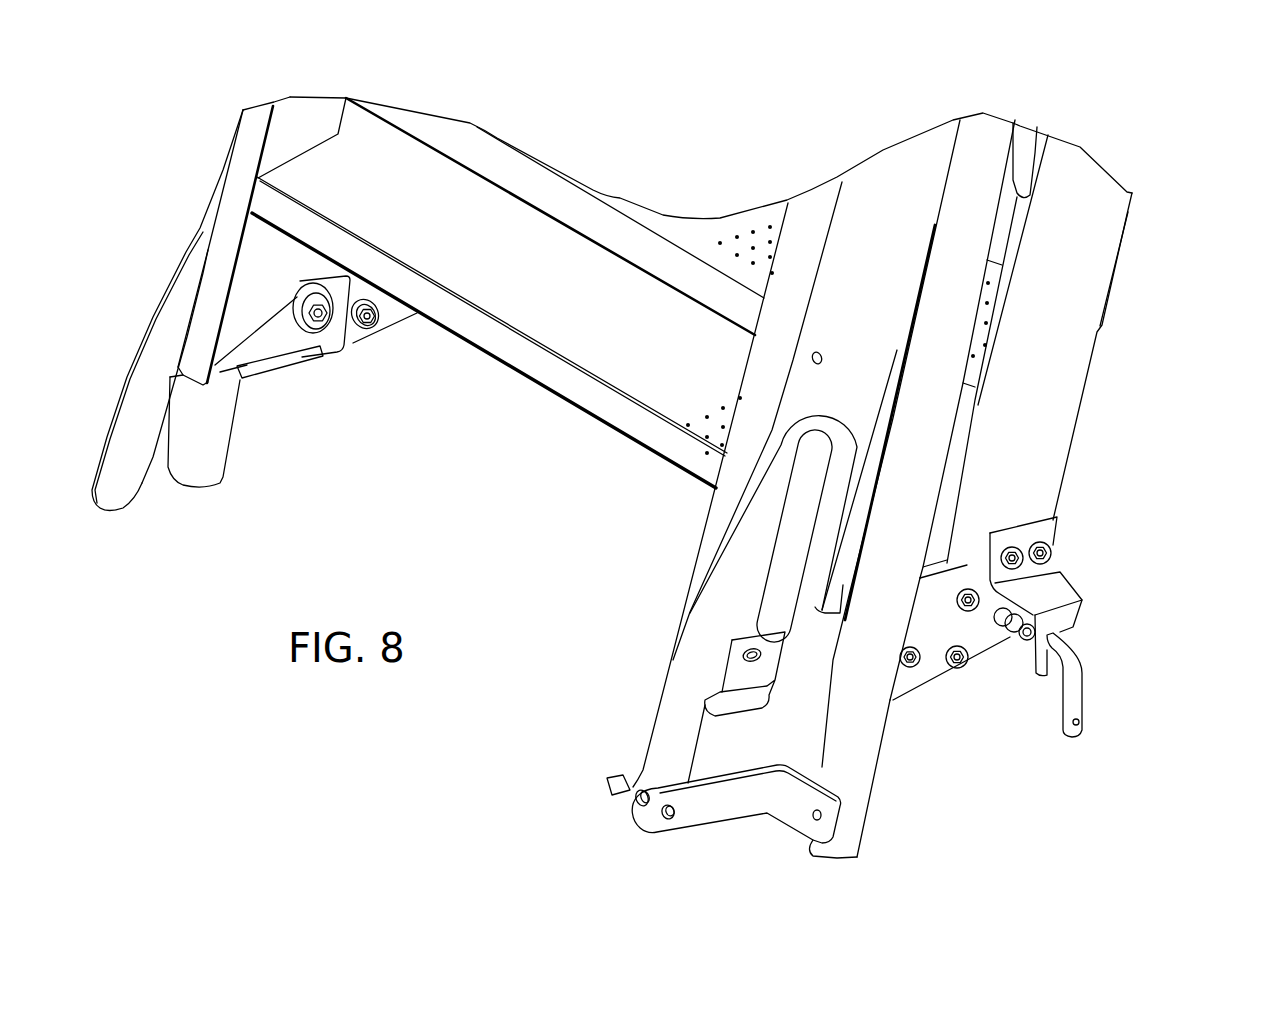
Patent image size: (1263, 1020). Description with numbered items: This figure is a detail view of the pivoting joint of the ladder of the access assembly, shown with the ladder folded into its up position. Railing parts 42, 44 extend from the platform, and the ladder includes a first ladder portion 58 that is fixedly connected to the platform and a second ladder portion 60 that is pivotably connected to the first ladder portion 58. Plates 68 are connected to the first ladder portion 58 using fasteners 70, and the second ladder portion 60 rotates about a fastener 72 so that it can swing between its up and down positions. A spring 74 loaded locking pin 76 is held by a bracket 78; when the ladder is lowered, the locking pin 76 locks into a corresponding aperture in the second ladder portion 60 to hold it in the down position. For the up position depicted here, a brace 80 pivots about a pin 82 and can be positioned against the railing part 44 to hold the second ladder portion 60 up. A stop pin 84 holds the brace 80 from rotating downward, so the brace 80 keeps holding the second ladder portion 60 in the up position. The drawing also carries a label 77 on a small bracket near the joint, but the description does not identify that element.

The railing part 42 is at (217, 442).
The railing part 44 is at (987, 135).
The first ladder portion 58 is at (1082, 280).
The second ladder portion 60 is at (633, 373).
The plates 68 is at (928, 670).
The fasteners 70 is at (375, 323).
The fastener 72 is at (316, 320).
The spring 74 is at (1010, 630).
The locking pin 76 is at (1082, 673).
The bracket 77 is at (748, 658).
The bracket 78 is at (1053, 592).
The brace 80 is at (727, 810).
The pin 82 is at (667, 817).
The stop pin 84 is at (607, 787).